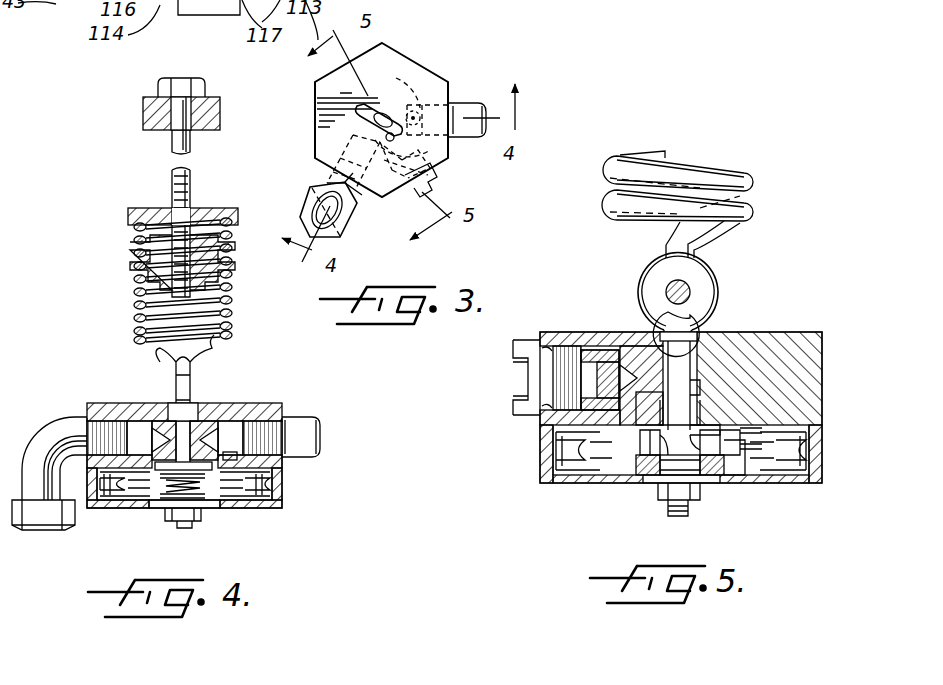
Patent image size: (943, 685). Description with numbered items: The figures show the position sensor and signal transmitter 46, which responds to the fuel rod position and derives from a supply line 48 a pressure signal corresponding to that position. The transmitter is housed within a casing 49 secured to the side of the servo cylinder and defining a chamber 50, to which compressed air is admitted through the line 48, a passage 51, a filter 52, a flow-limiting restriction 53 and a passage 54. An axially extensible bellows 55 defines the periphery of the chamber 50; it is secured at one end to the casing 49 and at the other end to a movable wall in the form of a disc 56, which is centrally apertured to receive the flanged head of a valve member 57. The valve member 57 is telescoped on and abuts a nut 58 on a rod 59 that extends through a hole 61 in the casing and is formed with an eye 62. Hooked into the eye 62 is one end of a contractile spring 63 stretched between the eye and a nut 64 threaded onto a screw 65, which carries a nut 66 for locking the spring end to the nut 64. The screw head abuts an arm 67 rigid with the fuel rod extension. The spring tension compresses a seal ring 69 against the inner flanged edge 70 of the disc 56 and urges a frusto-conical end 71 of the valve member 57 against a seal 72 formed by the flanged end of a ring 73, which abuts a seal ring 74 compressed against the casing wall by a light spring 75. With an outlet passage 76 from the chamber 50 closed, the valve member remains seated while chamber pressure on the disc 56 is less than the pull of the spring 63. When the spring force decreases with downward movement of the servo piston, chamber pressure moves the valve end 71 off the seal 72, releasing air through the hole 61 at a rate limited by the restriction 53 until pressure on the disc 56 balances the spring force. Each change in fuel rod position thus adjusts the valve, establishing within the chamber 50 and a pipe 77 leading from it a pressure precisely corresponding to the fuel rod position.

In FIG. 3, the position sensor and signal transmitter 46 is at (437, 58).
In FIG. 4, the position sensor and signal transmitter 46 is at (258, 392).
In FIG. 5, the position sensor and signal transmitter 46 is at (792, 322).
In FIG. 3, the supply line 48 is at (330, 188).
In FIG. 4, the supply line 48 is at (52, 428).
In FIG. 3, the casing 49 is at (318, 100).
In FIG. 4, the casing 49 is at (104, 406).
In FIG. 5, the casing 49 is at (810, 378).
In FIG. 4, the chamber 50 is at (140, 486).
In FIG. 5, the chamber 50 is at (615, 470).
In FIG. 3, the passage 51 is at (452, 165).
In FIG. 5, the passage 51 is at (620, 350).
In FIG. 5, the filter 52 is at (580, 346).
In FIG. 5, the flow-limiting restriction 53 is at (640, 372).
In FIG. 5, the passage 54 is at (640, 400).
In FIG. 4, the bellows 55 is at (282, 478).
In FIG. 5, the bellows 55 is at (560, 447).
In FIG. 4, the disc 56 is at (245, 508).
In FIG. 5, the disc 56 is at (580, 484).
In FIG. 4, the valve member 57 is at (182, 486).
In FIG. 5, the valve member 57 is at (665, 472).
In FIG. 4, the nut 58 is at (196, 518).
In FIG. 5, the nut 58 is at (680, 505).
In FIG. 4, the rod 59 is at (192, 392).
In FIG. 5, the rod 59 is at (705, 302).
In FIG. 5, the hole 61 is at (690, 400).
In FIG. 3, the eye 62 is at (368, 120).
In FIG. 5, the eye 62 is at (700, 270).
In FIG. 4, the contractile spring 63 is at (135, 312).
In FIG. 5, the contractile spring 63 is at (697, 172).
In FIG. 4, the nut 64 is at (158, 258).
In FIG. 4, the screw 65 is at (172, 178).
In FIG. 4, the nut 66 is at (148, 208).
In FIG. 4, the arm 67 is at (143, 115).
In FIG. 5, the seal ring 69 is at (740, 458).
In FIG. 5, the inner flanged edge 70 is at (745, 450).
In FIG. 5, the frusto-conical end 71 is at (645, 478).
In FIG. 5, the seal 72 is at (708, 462).
In FIG. 5, the ring 73 is at (762, 430).
In FIG. 5, the seal ring 74 is at (705, 430).
In FIG. 5, the light spring 75 is at (762, 446).
In FIG. 3, the outlet passage 76 is at (402, 111).
In FIG. 4, the outlet passage 76 is at (238, 456).
In FIG. 3, the pipe 77 is at (470, 104).
In FIG. 4, the pipe 77 is at (312, 432).